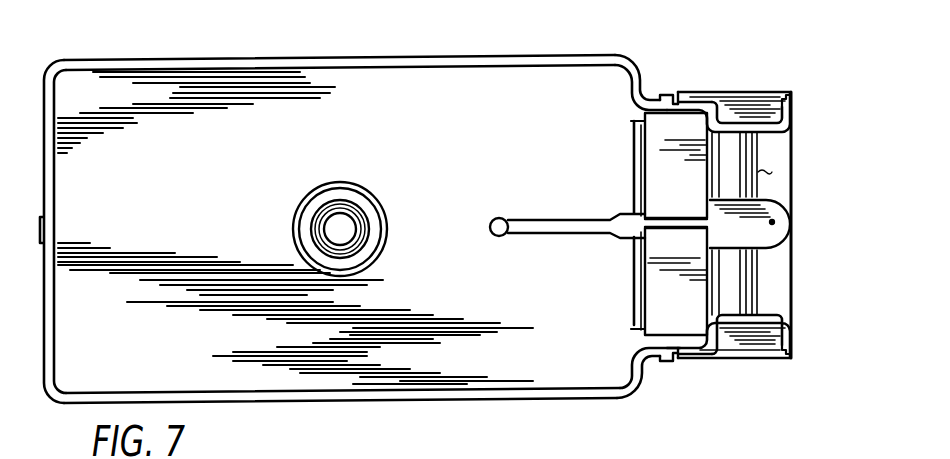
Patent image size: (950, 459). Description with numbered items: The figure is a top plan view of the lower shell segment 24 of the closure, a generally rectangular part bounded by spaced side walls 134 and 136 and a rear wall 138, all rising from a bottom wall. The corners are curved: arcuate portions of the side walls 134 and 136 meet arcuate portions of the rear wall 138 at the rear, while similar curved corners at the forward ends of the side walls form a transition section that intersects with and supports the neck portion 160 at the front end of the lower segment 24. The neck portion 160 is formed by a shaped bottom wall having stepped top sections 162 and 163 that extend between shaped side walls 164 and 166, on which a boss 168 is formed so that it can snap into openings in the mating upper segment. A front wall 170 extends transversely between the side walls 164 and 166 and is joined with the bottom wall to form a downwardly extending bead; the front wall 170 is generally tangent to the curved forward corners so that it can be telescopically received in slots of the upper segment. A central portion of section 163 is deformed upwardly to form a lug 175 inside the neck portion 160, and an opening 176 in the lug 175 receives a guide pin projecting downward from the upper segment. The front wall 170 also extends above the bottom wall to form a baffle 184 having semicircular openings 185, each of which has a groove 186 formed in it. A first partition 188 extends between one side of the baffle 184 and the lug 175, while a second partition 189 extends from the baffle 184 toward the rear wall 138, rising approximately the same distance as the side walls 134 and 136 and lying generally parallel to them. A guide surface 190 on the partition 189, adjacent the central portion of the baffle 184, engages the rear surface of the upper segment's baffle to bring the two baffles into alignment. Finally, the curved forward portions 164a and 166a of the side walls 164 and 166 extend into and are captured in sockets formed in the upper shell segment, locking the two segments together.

The lower shell segment 24 is at (360, 213).
The side wall 134 is at (430, 68).
The side wall 136 is at (113, 393).
The rear wall 138 is at (58, 200).
The neck portion 160 is at (722, 209).
The stepped top section 162 is at (660, 105).
The stepped top section 163 is at (752, 225).
The side wall 164 is at (739, 91).
The curved forward portion 164a is at (812, 88).
The side wall 166 is at (735, 361).
The curved forward portion 166a is at (753, 325).
The boss 168 is at (673, 358).
The front wall 170 is at (640, 104).
The lug 175 is at (772, 182).
The opening 176 is at (770, 223).
The baffle 184 is at (636, 316).
The semicircular opening 185 is at (630, 285).
The groove 186 is at (640, 260).
The first partition 188 is at (684, 217).
The second partition 189 is at (543, 222).
The guide surface 190 is at (648, 230).